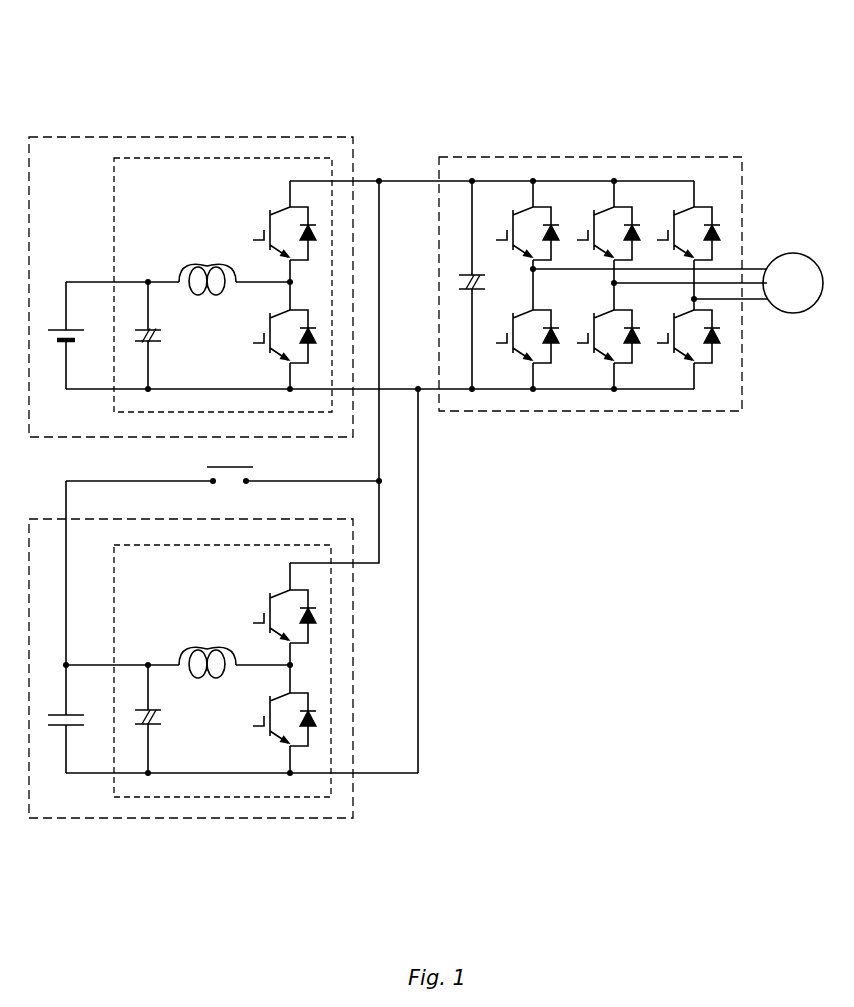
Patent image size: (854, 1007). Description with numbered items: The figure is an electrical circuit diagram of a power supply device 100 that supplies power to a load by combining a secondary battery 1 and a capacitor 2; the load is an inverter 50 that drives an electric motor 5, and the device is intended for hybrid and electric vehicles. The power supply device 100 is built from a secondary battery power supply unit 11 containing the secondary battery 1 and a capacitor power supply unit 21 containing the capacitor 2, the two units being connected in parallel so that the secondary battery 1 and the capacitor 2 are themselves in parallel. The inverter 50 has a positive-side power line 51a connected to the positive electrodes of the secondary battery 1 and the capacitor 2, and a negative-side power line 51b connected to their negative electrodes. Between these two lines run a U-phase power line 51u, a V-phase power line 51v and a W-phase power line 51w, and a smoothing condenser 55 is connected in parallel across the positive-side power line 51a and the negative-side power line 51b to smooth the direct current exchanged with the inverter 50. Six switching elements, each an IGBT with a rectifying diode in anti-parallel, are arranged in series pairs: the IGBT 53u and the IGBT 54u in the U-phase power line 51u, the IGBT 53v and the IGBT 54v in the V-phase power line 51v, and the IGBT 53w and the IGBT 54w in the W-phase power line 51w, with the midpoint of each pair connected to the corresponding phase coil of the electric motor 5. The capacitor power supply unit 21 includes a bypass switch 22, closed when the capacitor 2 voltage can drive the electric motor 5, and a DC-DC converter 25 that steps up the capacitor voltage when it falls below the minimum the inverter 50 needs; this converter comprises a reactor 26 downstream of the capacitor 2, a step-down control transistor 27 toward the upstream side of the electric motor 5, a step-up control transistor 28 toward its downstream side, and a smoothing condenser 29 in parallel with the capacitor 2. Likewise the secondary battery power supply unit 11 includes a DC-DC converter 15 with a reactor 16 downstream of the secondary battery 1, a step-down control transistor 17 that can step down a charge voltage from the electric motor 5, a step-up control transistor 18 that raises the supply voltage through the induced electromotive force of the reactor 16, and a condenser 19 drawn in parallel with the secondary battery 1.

The power supply device 100 is at (403, 79).
The secondary battery 1 is at (58, 343).
The capacitor 2 is at (58, 727).
The electric motor 5 is at (793, 253).
The secondary battery power supply unit 11 is at (313, 137).
The DC-DC converter 15 is at (258, 158).
The reactor 16 is at (200, 267).
The step-down control transistor 17 is at (282, 214).
The step-up control transistor 18 is at (284, 359).
The capacitor 19 is at (161, 341).
The capacitor power supply unit 21 is at (327, 818).
The bypass switch 22 is at (253, 467).
The DC-DC converter 25 is at (262, 797).
The reactor 26 is at (200, 650).
The step-down control transistor 27 is at (282, 597).
The step-up control transistor 28 is at (284, 742).
The smoothing condenser 29 is at (161, 724).
The inverter 50 is at (735, 157).
The positive-side power line 51a is at (495, 180).
The negative-side power line 51b is at (489, 391).
The U-phase power line 51u is at (536, 198).
The V-phase power line 51v is at (614, 197).
The W-phase power line 51w is at (694, 195).
The IGBT 53u is at (528, 257).
The IGBT 53v is at (609, 257).
The IGBT 53w is at (689, 257).
The IGBT 54u is at (527, 361).
The IGBT 54v is at (608, 361).
The IGBT 54w is at (688, 361).
The smoothing condenser 55 is at (469, 291).